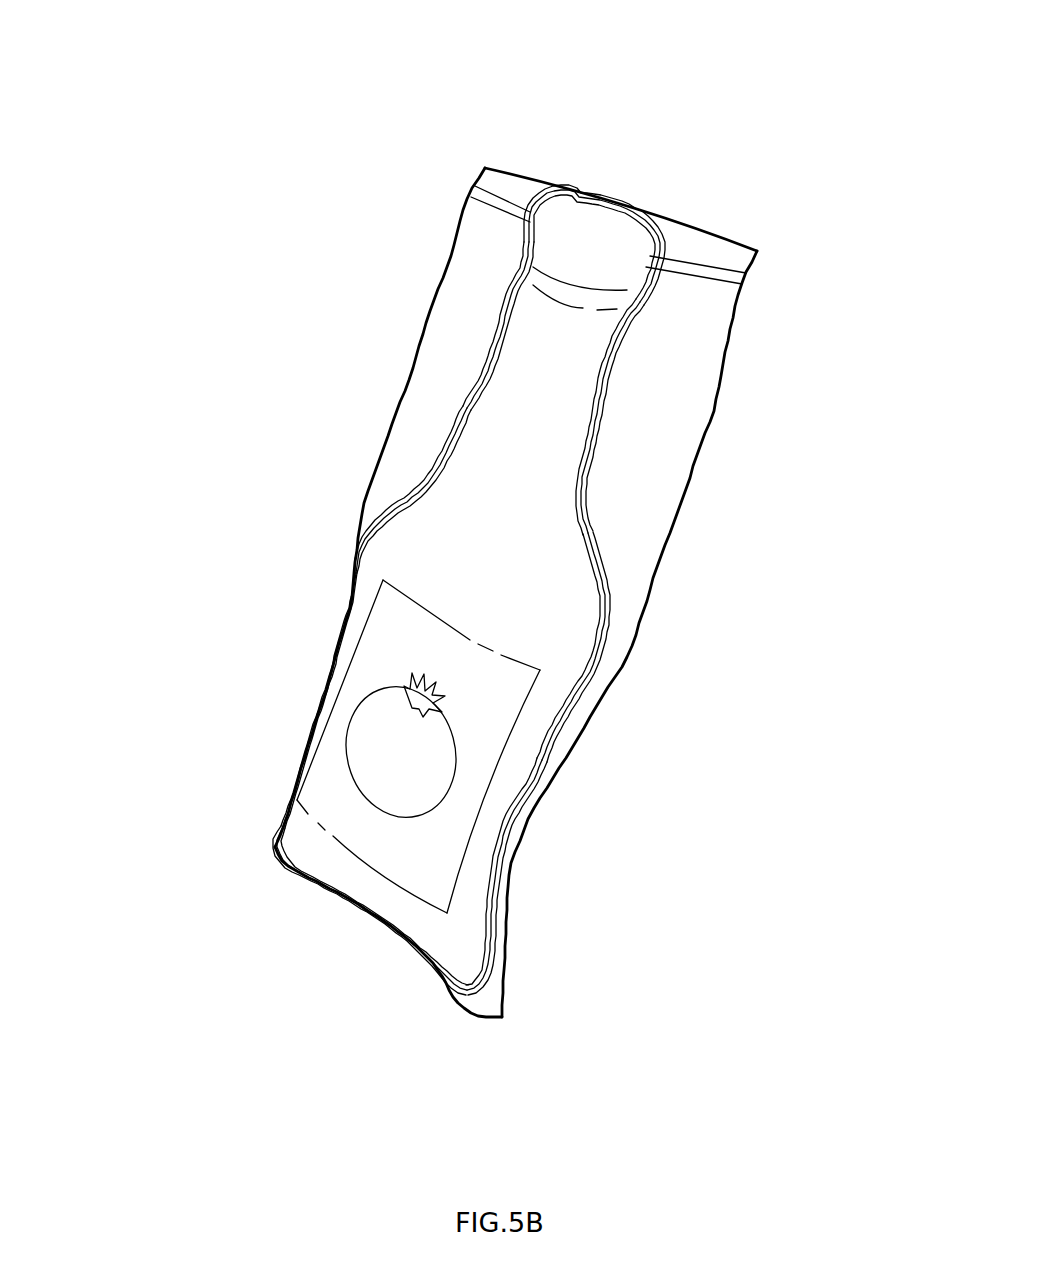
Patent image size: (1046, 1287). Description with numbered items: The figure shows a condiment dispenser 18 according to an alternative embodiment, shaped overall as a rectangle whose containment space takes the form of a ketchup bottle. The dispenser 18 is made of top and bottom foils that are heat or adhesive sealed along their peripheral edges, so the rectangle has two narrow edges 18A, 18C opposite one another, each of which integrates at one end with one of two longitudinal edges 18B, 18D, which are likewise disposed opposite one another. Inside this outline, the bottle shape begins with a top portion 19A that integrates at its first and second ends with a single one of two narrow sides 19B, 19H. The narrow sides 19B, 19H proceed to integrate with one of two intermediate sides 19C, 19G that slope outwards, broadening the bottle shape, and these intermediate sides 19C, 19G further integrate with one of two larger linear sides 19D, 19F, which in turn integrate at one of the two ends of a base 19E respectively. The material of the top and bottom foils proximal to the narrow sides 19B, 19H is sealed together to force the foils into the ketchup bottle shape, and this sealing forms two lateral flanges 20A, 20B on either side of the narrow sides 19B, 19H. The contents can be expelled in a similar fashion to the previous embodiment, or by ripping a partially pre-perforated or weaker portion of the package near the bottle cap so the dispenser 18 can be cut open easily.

The dispenser 18 is at (700, 112).
The narrow edge 18A is at (693, 225).
The longitudinal edge 18B is at (672, 634).
The narrow edge 18C is at (325, 920).
The longitudinal edge 18D is at (325, 580).
The top portion 19A is at (615, 199).
The narrow side 19B is at (608, 408).
The intermediate side 19C is at (608, 555).
The larger linear side 19D is at (620, 750).
The base 19E is at (283, 868).
The larger linear side 19F is at (302, 703).
The intermediate side 19G is at (395, 489).
The narrow side 19H is at (490, 340).
The lateral flange 20A is at (467, 257).
The lateral flange 20B is at (688, 333).